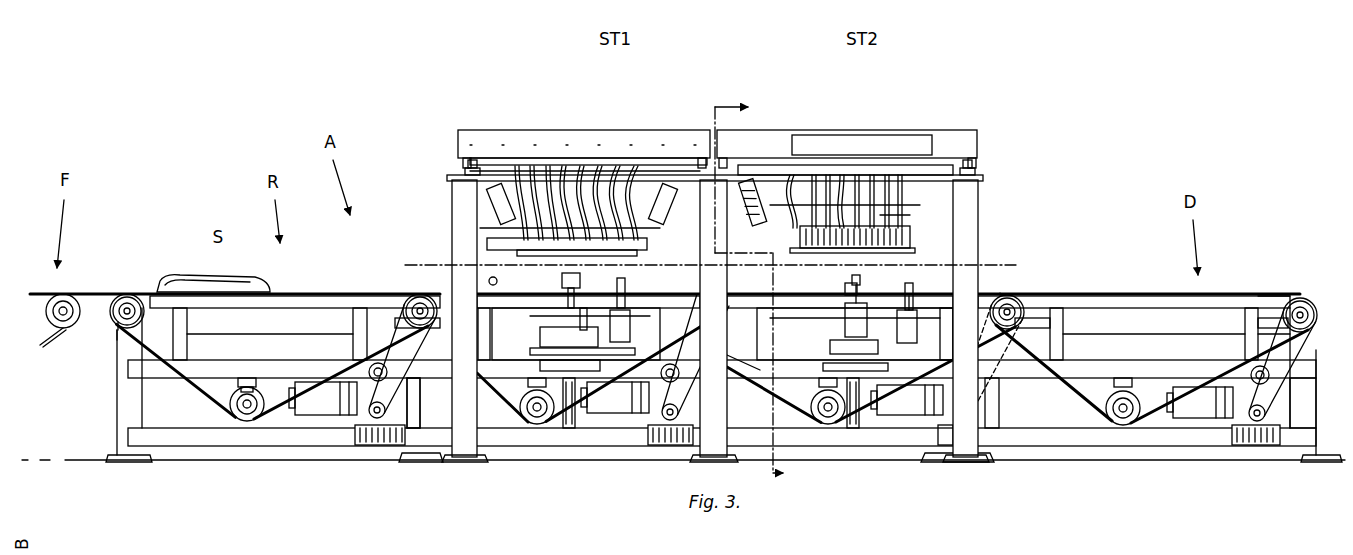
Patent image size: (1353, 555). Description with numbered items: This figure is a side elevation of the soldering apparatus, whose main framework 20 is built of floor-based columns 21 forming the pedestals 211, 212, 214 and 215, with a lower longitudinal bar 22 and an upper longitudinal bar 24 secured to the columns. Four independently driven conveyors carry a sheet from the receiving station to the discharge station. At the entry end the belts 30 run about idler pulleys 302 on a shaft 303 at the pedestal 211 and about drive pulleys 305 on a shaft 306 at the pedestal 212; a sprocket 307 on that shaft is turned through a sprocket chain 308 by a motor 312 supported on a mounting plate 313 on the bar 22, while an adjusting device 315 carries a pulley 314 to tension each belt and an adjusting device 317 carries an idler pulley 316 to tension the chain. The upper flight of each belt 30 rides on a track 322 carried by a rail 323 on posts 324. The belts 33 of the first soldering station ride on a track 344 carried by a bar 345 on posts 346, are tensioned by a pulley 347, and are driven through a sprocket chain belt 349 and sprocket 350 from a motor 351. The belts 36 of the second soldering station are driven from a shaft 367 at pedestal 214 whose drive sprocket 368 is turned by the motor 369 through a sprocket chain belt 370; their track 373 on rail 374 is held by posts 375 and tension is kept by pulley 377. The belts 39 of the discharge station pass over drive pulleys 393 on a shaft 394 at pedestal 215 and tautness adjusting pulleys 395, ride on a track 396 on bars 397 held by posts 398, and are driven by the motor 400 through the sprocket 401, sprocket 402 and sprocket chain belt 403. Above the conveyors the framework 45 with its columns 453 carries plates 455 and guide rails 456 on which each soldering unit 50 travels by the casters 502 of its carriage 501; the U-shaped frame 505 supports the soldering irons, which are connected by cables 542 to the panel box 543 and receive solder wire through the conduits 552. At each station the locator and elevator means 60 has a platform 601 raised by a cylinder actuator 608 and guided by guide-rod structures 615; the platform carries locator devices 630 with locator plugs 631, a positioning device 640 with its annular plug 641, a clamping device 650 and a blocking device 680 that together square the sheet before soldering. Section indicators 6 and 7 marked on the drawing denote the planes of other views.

The framework 20 is at (105, 376).
The columns 21 is at (120, 391).
The pedestal 211 is at (120, 410).
The pedestal 212 is at (420, 410).
The pedestal 214 is at (1005, 430).
The pedestal 215 is at (1297, 405).
The bar 22 is at (185, 440).
The bar 24 is at (215, 368).
The conveyor belts 30 is at (282, 292).
The idler pulleys 302 is at (125, 305).
The shaft 303 is at (118, 323).
The drive pulleys 305 is at (412, 298).
The shaft 306 is at (425, 297).
The sprocket 307 is at (405, 300).
The sprocket chain 308 is at (403, 324).
The motor 312 is at (322, 416).
The mounting plate 313 is at (380, 445).
The pulley 314 is at (248, 423).
The adjusting device 315 is at (254, 378).
The idler pulley 316 is at (291, 363).
The adjusting device 317 is at (405, 372).
The track 322 is at (312, 296).
The rail 323 is at (240, 304).
The posts 324 is at (187, 331).
The conveyor belts 33 is at (485, 386).
The track 344 is at (652, 300).
The bar 345 is at (652, 306).
The posts 346 is at (655, 352).
The tautness adjusting pulley 347 is at (520, 409).
The sprocket chain belt 349 is at (780, 396).
The sprocket 350 is at (670, 421).
The motor 351 is at (607, 414).
The conveyor belts 36 is at (818, 401).
The shaft 367 is at (1025, 294).
The drive sprocket 368 is at (1045, 298).
The motor 369 is at (908, 416).
The sprocket chain belt 370 is at (1010, 395).
The track 373 is at (783, 292).
The rail 374 is at (736, 310).
The posts 375 is at (762, 350).
The pulley 377 is at (811, 414).
The conveyor belts 39 is at (1092, 407).
The drive pulleys 393 is at (1290, 306).
The shaft 394 is at (1300, 298).
The tautness adjusting pulleys 395 is at (1125, 426).
The track 396 is at (1145, 296).
The bars 397 is at (1124, 308).
The posts 398 is at (1063, 341).
The motor 400 is at (1195, 419).
The sprocket 401 is at (1260, 422).
The sprocket 402 is at (1277, 300).
The sprocket chain belt 403 is at (1275, 336).
The structural framework 45 is at (450, 208).
The columns 453 is at (452, 228).
The plates 455 is at (460, 183).
The guide rails 456 is at (460, 172).
The soldering unit 50 is at (537, 128).
The carriage 501 is at (585, 146).
The casters 502 is at (462, 166).
The U-shaped frame 505 is at (620, 168).
The cable 542 is at (888, 205).
The panel box 543 is at (893, 147).
The conduit 552 is at (536, 168).
The locator and elevator means 60 is at (596, 296).
The platform 601 is at (548, 355).
The cylinder actuator 608 is at (568, 428).
The guide-rod structures 615 is at (830, 352).
The locator devices 630 is at (630, 289).
The locator plugs 631 is at (915, 300).
The positioning device 640 is at (842, 287).
The annular plug 641 is at (859, 290).
The clamping device 650 is at (559, 283).
The blocking device 680 is at (494, 277).
The section line 6 is at (405, 277).
The section line 7 is at (756, 114).